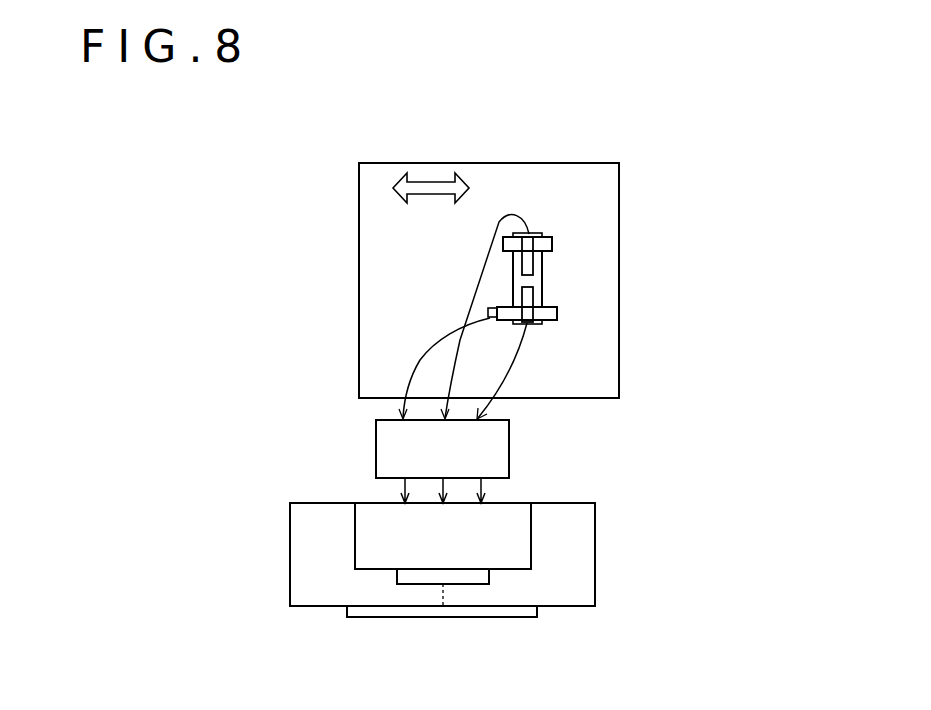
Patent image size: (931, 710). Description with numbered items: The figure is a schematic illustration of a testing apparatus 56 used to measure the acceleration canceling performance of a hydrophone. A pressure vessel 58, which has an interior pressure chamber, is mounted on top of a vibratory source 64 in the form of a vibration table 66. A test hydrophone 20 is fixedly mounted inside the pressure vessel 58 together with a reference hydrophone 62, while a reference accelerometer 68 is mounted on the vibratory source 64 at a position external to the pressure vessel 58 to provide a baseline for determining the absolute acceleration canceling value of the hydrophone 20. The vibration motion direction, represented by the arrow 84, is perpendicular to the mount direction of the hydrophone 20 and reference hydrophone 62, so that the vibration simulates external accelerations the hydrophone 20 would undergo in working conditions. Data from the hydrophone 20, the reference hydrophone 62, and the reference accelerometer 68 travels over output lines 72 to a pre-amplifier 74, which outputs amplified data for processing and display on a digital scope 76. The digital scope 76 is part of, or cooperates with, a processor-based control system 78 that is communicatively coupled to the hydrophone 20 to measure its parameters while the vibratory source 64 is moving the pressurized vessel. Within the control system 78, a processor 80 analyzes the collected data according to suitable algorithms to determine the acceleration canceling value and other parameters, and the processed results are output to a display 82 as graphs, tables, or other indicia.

The testing apparatus 56 is at (303, 172).
The arrow 84 is at (433, 184).
The vibratory source 64 is at (619, 210).
The vibration table 66 is at (597, 249).
The hydrophone 20 is at (545, 260).
The pressure vessel 58 is at (545, 293).
The reference hydrophone 62 is at (528, 323).
The reference accelerometer 68 is at (492, 308).
The output lines 72 is at (510, 368).
The pre-amplifier 74 is at (376, 448).
The digital scope 76 is at (355, 530).
The processor-based control system 78 is at (598, 503).
The processor 80 is at (489, 579).
The display 82 is at (493, 617).